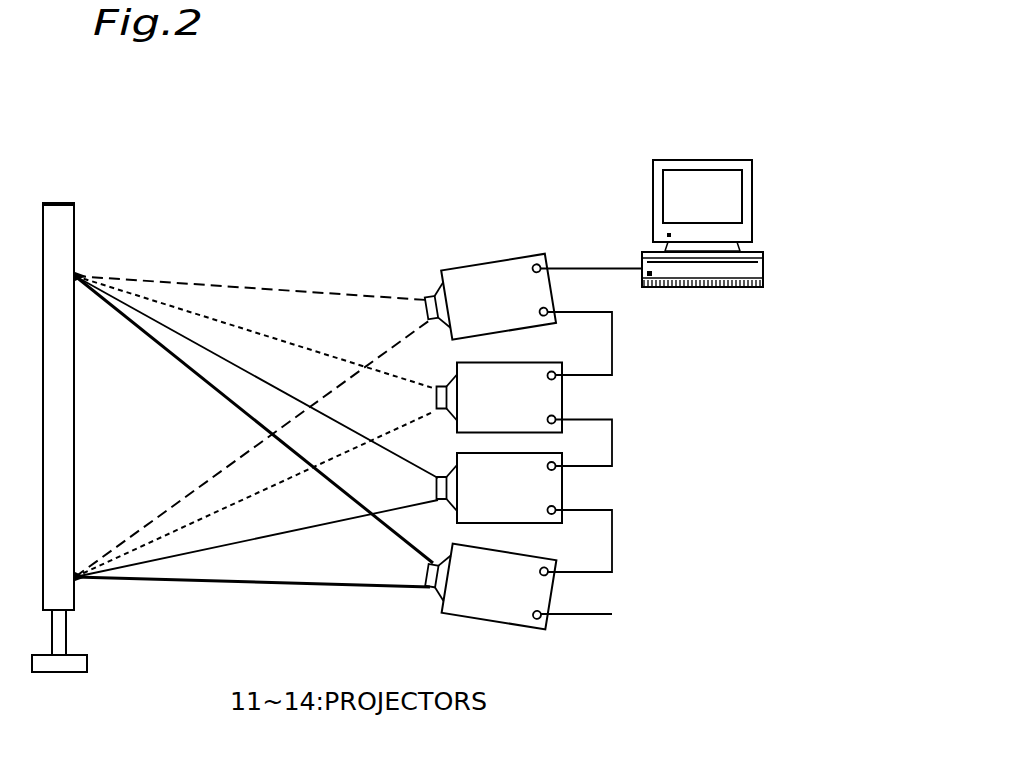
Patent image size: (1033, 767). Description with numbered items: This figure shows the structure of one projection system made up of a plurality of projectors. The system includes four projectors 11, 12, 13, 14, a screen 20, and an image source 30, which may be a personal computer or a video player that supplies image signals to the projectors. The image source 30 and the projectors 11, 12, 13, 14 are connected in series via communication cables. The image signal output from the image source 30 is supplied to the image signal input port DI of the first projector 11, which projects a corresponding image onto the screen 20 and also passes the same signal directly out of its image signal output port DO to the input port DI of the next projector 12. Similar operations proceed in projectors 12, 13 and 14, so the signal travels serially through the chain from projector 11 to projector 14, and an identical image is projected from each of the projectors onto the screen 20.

The projector 11 is at (500, 262).
The projector 12 is at (524, 362).
The projector 13 is at (523, 523).
The projector 14 is at (517, 628).
The screen 20 is at (62, 203).
The image source 30 is at (688, 287).